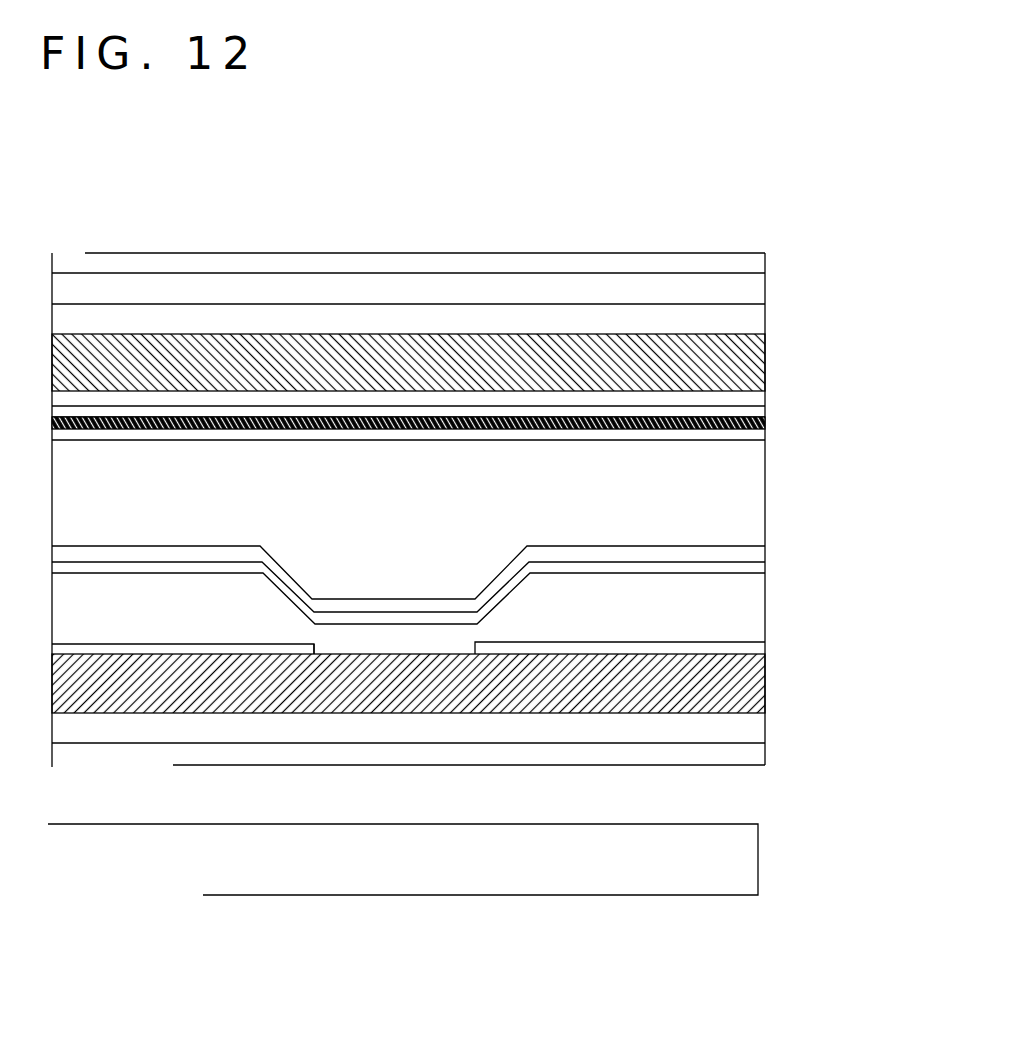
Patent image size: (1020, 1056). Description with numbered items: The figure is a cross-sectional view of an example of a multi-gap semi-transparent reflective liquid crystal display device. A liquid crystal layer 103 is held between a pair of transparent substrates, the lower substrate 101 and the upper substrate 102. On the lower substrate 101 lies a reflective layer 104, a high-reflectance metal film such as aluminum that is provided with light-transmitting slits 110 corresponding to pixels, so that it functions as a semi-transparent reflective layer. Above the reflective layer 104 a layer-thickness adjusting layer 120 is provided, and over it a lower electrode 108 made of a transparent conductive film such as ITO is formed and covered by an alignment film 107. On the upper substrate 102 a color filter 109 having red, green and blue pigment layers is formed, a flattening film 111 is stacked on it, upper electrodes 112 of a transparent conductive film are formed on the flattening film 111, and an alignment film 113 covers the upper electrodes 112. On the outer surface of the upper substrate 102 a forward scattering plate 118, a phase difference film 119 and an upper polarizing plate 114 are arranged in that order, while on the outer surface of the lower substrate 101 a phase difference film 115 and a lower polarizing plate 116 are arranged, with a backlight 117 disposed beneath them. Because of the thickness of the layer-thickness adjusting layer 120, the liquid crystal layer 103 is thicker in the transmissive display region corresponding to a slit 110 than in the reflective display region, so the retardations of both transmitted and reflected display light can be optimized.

The lower substrate 101 is at (745, 690).
The upper substrate 102 is at (740, 367).
The liquid crystal layer 103 is at (740, 465).
The reflective layer 104 is at (725, 647).
The alignment film 107 is at (727, 555).
The lower electrode 108 is at (727, 565).
The color filter 109 is at (740, 398).
The light-transmitting slit 110 is at (325, 653).
The flattening film 111 is at (738, 413).
The upper electrodes 112 is at (765, 421).
The alignment film 113 is at (740, 437).
The upper polarizing plate 114 is at (730, 258).
The phase difference film 115 is at (730, 728).
The lower polarizing plate 116 is at (725, 753).
The backlight 117 is at (722, 846).
The forward scattering plate 118 is at (735, 313).
The phase difference film 119 is at (735, 292).
The layer-thickness adjusting layer 120 is at (848, 611).